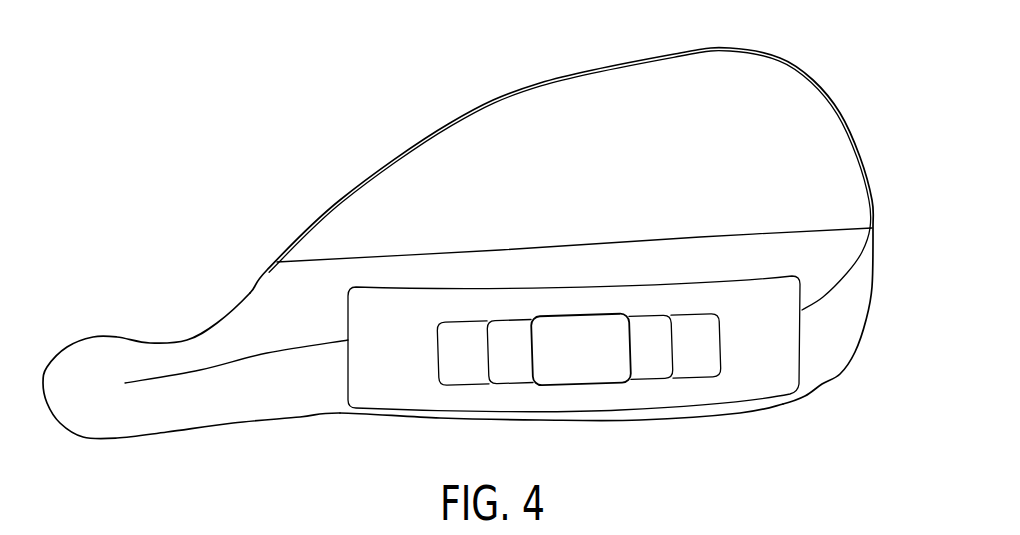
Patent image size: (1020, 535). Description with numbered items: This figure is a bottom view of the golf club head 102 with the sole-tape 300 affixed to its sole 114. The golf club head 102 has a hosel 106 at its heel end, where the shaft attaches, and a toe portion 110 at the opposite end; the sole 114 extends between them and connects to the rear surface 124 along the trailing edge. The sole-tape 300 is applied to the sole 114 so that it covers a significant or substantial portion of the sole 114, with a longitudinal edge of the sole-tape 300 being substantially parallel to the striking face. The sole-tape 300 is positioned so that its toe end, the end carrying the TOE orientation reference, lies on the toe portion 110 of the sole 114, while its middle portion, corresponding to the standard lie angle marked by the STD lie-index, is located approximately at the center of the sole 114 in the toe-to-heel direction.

The golf club head 102 is at (441, 100).
The hosel 106 is at (99, 439).
The toe portion 110 is at (843, 320).
The sole 114 is at (600, 414).
The rear surface 124 is at (694, 75).
The sole-tape 300 is at (767, 386).